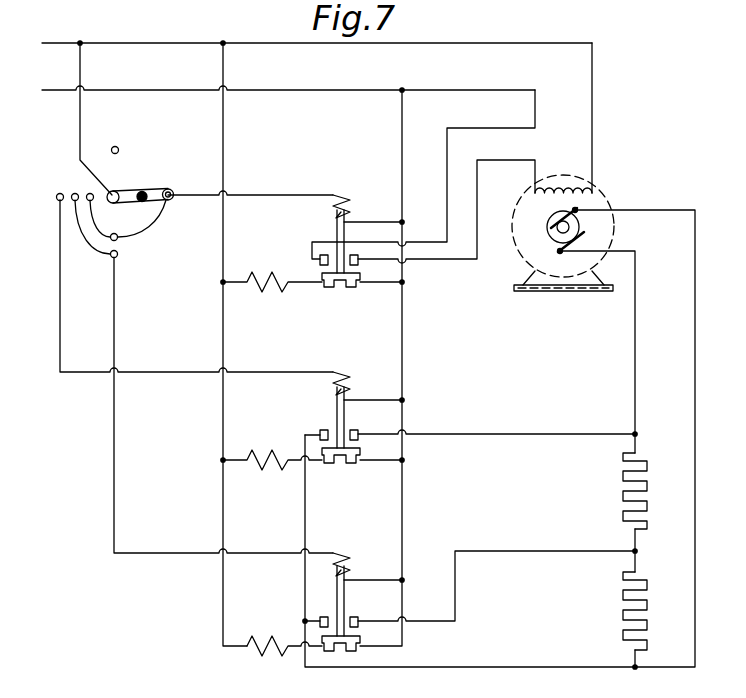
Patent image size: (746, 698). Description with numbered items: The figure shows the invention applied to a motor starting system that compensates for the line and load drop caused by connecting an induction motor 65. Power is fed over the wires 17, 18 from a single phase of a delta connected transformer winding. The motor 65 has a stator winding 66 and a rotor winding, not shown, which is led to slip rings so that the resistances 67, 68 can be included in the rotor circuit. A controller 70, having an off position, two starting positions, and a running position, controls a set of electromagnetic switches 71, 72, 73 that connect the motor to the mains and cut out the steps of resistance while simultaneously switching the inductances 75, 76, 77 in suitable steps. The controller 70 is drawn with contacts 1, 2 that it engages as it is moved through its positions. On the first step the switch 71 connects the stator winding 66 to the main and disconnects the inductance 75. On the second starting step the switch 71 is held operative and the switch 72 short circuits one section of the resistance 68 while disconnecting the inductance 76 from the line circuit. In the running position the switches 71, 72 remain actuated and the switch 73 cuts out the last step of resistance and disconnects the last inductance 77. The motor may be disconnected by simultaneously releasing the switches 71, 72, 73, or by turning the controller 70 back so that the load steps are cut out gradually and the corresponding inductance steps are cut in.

The wire 17 is at (60, 37).
The wire 18 is at (53, 93).
The controller 70 is at (119, 145).
The switch contact 1 is at (172, 203).
The switch contact 2 is at (122, 256).
The electromagnetic switch 71 is at (362, 241).
The electromagnetic switch 72 is at (354, 601).
The electromagnetic switch 73 is at (354, 417).
The inductance 75 is at (271, 273).
The inductance 76 is at (284, 636).
The inductance 77 is at (271, 451).
The induction motor 65 is at (606, 203).
The stator winding 66 is at (562, 186).
The resistance 67 is at (618, 491).
The resistance 68 is at (619, 611).